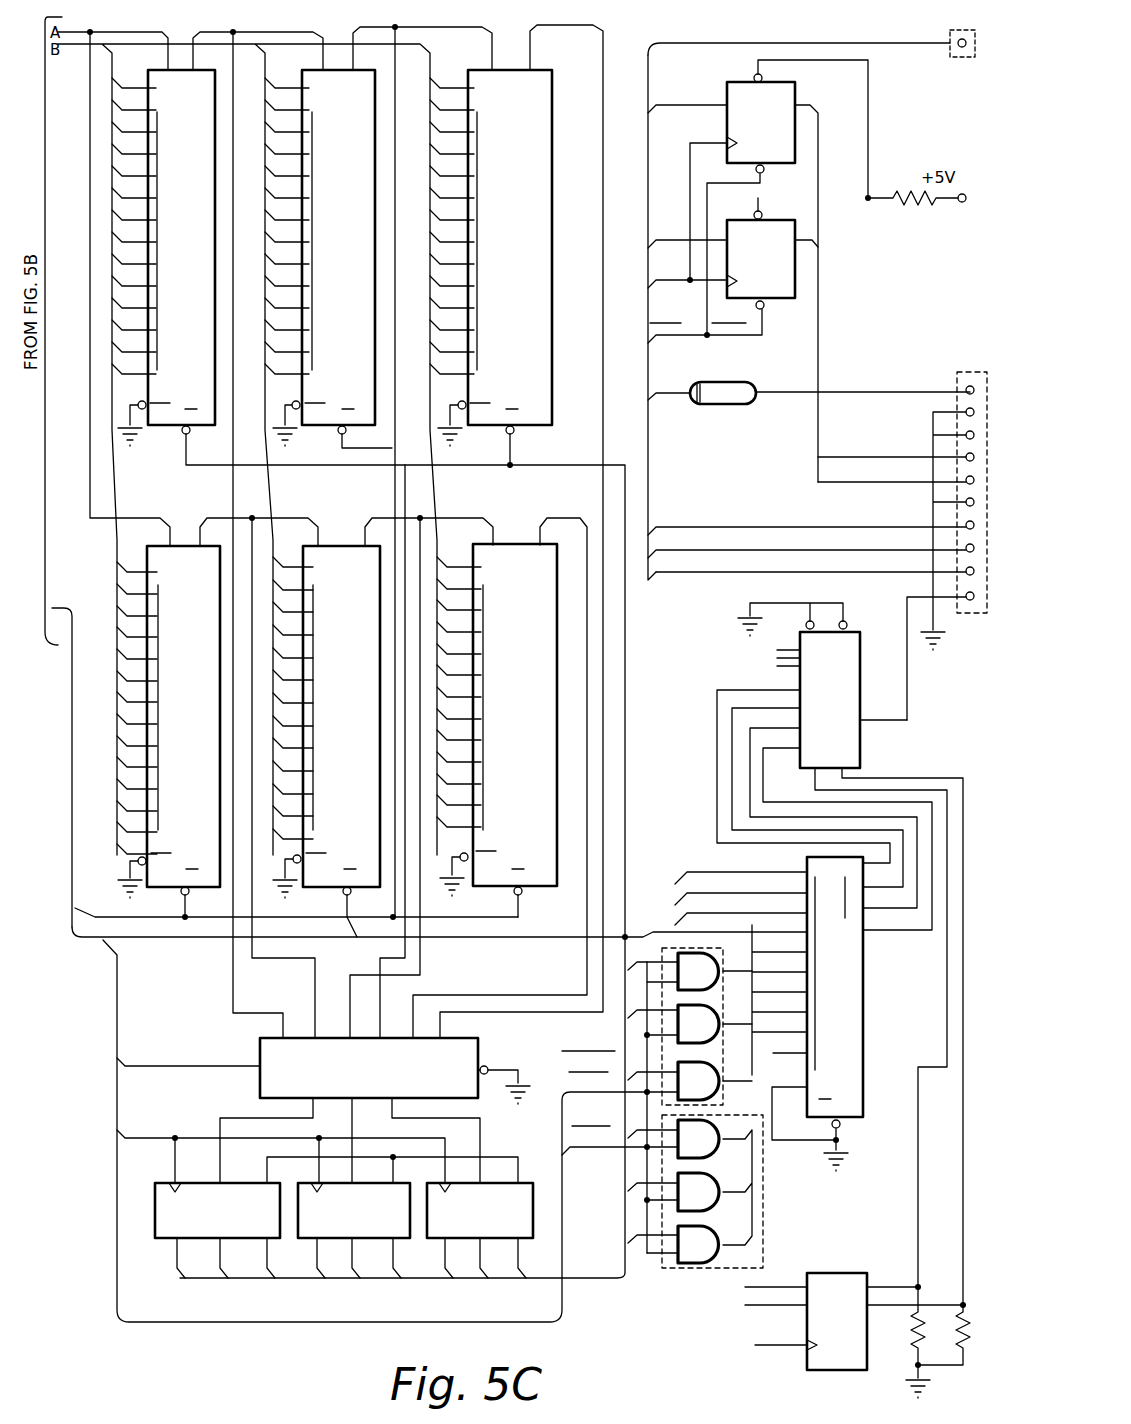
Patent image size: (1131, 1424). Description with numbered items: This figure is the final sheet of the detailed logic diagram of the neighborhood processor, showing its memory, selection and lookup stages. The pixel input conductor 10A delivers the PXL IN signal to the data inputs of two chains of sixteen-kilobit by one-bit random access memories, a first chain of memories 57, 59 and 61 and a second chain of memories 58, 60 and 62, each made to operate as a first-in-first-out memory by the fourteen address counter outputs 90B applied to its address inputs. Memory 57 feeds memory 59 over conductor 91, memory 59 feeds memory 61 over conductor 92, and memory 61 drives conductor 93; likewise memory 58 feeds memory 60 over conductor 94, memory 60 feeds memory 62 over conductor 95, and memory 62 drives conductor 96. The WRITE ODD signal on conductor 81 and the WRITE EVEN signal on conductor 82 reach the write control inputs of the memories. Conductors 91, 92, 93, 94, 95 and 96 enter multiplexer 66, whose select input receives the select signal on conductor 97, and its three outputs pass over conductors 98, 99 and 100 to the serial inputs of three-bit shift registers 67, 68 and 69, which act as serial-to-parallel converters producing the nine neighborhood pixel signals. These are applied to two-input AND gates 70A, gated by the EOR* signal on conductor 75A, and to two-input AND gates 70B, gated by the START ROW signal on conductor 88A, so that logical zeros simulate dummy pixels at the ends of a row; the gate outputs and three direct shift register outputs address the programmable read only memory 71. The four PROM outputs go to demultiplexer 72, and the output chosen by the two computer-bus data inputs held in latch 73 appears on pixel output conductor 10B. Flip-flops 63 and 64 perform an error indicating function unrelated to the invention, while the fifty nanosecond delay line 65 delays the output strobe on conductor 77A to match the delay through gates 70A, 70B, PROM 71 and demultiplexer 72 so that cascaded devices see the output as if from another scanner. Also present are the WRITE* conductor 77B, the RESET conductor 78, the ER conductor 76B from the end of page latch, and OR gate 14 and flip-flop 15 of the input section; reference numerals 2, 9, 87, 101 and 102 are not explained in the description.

The circuit board 2 is at (150, 1328).
The signal line 9 is at (162, 935).
The pixel input conductor 10A is at (133, 30).
The pixel output conductor 10B is at (905, 674).
The OR gate 14 is at (68, 40).
The flip-flop 15 is at (78, 767).
The first memory register circuit 57 is at (163, 248).
The fourth memory register circuit 58 is at (168, 720).
The second memory register circuit 59 is at (320, 248).
The memory register circuit 60 is at (326, 730).
The third memory register circuit 61 is at (491, 248).
The sixth memory register circuit 62 is at (497, 720).
The flip-flop 63 is at (725, 80).
The flip-flop 64 is at (737, 216).
The fifty nanosecond delay line 65 is at (718, 404).
The multiplexer circuit 66 is at (258, 1040).
The three-bit shift register 67 is at (155, 1200).
The three-bit shift register 68 is at (298, 1240).
The three-bit shift register 69 is at (433, 1240).
The two-input AND gates 70A is at (682, 1272).
The two-input AND gates 70B is at (690, 945).
The programmable read only memory 71 is at (866, 1042).
The demultiplexer 72 is at (862, 760).
The latch 73 is at (815, 1273).
The EOR* conductor 75A is at (572, 1155).
The ER conductor 76B is at (912, 527).
The output strobe conductor 77A is at (668, 400).
The WRITE* conductor 77B is at (772, 397).
The RESET conductor 78 is at (827, 527).
The WRITE ODD conductor 81 is at (533, 465).
The WRITE EVEN conductor 82 is at (338, 431).
The shift register clock line 87 is at (160, 1143).
The (START ROW)* conductor 88A is at (637, 1012).
The address counter outputs 90B is at (268, 488).
The conductor 91 is at (277, 31).
The conductor 92 is at (444, 27).
The conductor 93 is at (562, 27).
The conductor 94 is at (227, 512).
The conductor 95 is at (377, 513).
The conductor 96 is at (553, 513).
The conductor 97 is at (218, 1073).
The conductor 98 is at (257, 1115).
The conductor 99 is at (353, 1122).
The conductor 100 is at (480, 1130).
The shift register output lines 101 is at (472, 1280).
The demultiplexer output lines 102 is at (717, 810).